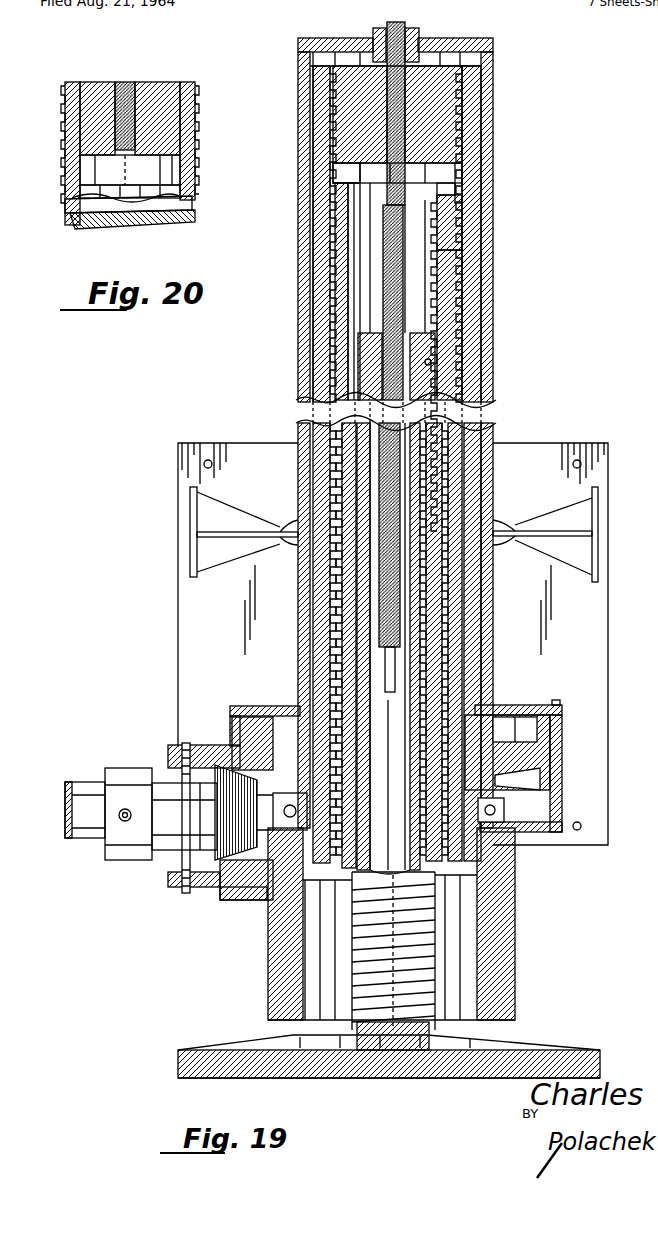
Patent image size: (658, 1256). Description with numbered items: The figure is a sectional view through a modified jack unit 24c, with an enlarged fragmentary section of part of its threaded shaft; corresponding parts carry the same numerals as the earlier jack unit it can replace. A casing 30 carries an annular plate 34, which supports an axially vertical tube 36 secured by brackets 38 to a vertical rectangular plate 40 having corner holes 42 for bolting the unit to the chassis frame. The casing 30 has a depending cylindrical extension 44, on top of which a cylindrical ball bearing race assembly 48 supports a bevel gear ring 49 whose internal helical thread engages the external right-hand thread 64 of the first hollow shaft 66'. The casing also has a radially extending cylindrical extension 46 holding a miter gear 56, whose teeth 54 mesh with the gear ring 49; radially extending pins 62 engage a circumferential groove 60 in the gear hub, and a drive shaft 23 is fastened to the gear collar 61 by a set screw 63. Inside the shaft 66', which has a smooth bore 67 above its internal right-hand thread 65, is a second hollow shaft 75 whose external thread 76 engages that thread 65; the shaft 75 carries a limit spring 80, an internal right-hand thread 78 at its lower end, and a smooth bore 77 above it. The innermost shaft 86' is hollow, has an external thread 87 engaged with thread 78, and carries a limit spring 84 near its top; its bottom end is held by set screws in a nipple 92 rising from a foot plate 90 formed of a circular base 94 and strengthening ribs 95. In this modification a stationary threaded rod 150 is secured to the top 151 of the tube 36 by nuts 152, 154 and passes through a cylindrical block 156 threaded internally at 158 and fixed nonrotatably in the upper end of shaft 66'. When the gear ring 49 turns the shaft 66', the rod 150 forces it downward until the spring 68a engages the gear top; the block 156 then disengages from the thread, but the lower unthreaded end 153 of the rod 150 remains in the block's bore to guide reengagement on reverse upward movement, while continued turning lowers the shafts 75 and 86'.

In FIG. 19, the top of tube 151 is at (470, 42).
In FIG. 19, the nut 152 is at (373, 36).
In FIG. 19, the nut 154 is at (421, 48).
In FIG. 19, the internal axial thread 158 is at (403, 97).
In FIG. 20, the internal axial thread 158 is at (140, 72).
In FIG. 19, the cylindrical block 156 is at (432, 128).
In FIG. 20, the cylindrical block 156 is at (153, 174).
In FIG. 19, the spring 68a is at (313, 97).
In FIG. 20, the spring 68a is at (65, 128).
In FIG. 19, the external right-hand thread 64 is at (470, 160).
In FIG. 20, the external right-hand thread 64 is at (195, 203).
In FIG. 19, the tube 36 is at (445, 170).
In FIG. 19, the first elongated hollow cylindrical shaft 66' is at (520, 183).
In FIG. 20, the first elongated hollow cylindrical shaft 66' is at (125, 224).
In FIG. 19, the hollow shaft 75 is at (447, 190).
In FIG. 19, the limit spring 80 is at (462, 213).
In FIG. 19, the external right-hand thread 76 is at (460, 250).
In FIG. 19, the stationary threaded rod 150 is at (403, 278).
In FIG. 19, the smooth bore 67 is at (355, 172).
In FIG. 20, the smooth bore 67 is at (90, 193).
In FIG. 19, the smooth bore 77 is at (360, 290).
In FIG. 19, the external right-hand thread 87 is at (430, 350).
In FIG. 19, the limit spring 84 is at (430, 364).
In FIG. 19, the jack unit 24c is at (284, 407).
In FIG. 19, the bracket 38 is at (580, 518).
In FIG. 19, the vertical rectangular plate 40 is at (578, 640).
In FIG. 19, the annular plate 34 is at (525, 713).
In FIG. 19, the casing 30 is at (562, 728).
In FIG. 19, the bevel gear ring 49 is at (537, 750).
In FIG. 19, the cylindrical ball bearing race assembly 48 is at (505, 795).
In FIG. 19, the corner hole 42 is at (584, 826).
In FIG. 19, the depending cylindrical extension 44 is at (500, 913).
In FIG. 19, the lower unthreaded end 153 is at (398, 668).
In FIG. 19, the shaft 86' is at (443, 648).
In FIG. 19, the internal right-hand thread 78 is at (372, 818).
In FIG. 19, the internal right-hand thread 65 is at (298, 718).
In FIG. 19, the miter gear 56 is at (215, 775).
In FIG. 19, the circumferential groove 60 is at (180, 790).
In FIG. 19, the drive shaft 23 is at (88, 795).
In FIG. 19, the set screw 63 is at (120, 820).
In FIG. 19, the gear collar 61 is at (136, 848).
In FIG. 19, the radially extending pin 62 is at (185, 893).
In FIG. 19, the radially extending cylindrical extension 46 is at (208, 876).
In FIG. 19, the teeth 54 is at (245, 855).
In FIG. 19, the rib 95 is at (300, 1040).
In FIG. 19, the circular base 94 is at (278, 1066).
In FIG. 19, the foot plate 90 is at (354, 1086).
In FIG. 19, the nipple 92 is at (412, 1050).